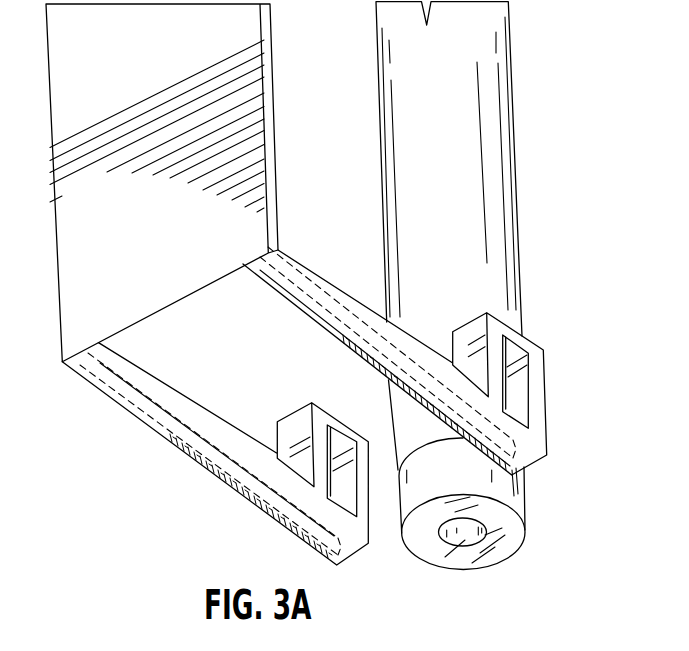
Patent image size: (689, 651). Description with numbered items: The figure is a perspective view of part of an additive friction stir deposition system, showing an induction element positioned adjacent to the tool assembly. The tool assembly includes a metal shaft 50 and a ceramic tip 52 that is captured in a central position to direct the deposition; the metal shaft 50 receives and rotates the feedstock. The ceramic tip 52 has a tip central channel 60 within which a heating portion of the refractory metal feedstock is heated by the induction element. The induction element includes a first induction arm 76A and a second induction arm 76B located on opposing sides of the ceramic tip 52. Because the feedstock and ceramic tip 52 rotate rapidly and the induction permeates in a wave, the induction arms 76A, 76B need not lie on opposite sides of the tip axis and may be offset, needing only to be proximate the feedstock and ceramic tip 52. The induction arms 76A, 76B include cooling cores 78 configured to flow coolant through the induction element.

The metal shaft 50 is at (513, 127).
The ceramic tip 52 is at (526, 499).
The tip central channel 60 is at (468, 535).
The first induction arm 76A is at (548, 408).
The second induction arm 76B is at (272, 516).
The cooling cores 78 is at (194, 456).